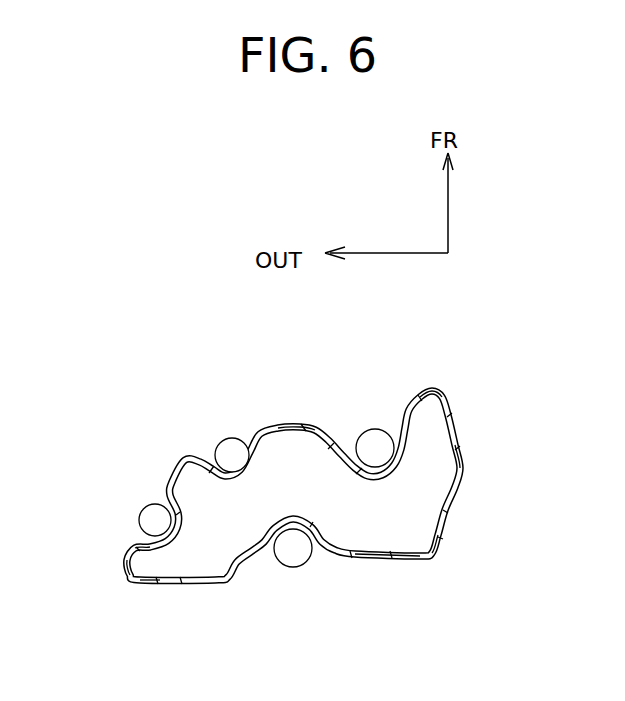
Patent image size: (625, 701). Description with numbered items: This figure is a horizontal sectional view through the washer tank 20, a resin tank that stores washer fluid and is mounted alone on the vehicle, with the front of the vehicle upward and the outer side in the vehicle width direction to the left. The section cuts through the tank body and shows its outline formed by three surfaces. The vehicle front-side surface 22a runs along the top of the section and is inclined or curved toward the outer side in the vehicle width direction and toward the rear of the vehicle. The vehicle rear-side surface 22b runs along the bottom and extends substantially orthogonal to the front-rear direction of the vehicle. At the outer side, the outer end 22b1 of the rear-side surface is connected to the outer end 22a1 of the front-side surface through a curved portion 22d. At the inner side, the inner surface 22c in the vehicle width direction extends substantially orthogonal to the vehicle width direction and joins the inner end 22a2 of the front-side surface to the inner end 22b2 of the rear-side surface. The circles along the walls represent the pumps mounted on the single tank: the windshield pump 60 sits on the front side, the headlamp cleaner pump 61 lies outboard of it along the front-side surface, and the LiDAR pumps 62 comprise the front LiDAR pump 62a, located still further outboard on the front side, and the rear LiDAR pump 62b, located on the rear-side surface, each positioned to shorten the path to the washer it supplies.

The washer tank 20 is at (460, 408).
The vehicle front-side surface 22a is at (290, 424).
The outer end of the vehicle front-side surface 22a1 is at (130, 542).
The inner end of the vehicle front-side surface 22a2 is at (432, 388).
The vehicle rear-side surface 22b is at (363, 558).
The outer end of the vehicle rear-side surface 22b1 is at (138, 582).
The inner end of the vehicle rear-side surface 22b2 is at (432, 560).
The inner surface in the vehicle width direction 22c is at (462, 453).
The curved portion 22d is at (123, 558).
The windshield pump 60 is at (378, 447).
The headlamp cleaner pump 61 is at (235, 457).
The LiDAR pumps 62 is at (200, 539).
The front LiDAR pump 62a is at (154, 520).
The rear LiDAR pump 62b is at (295, 553).